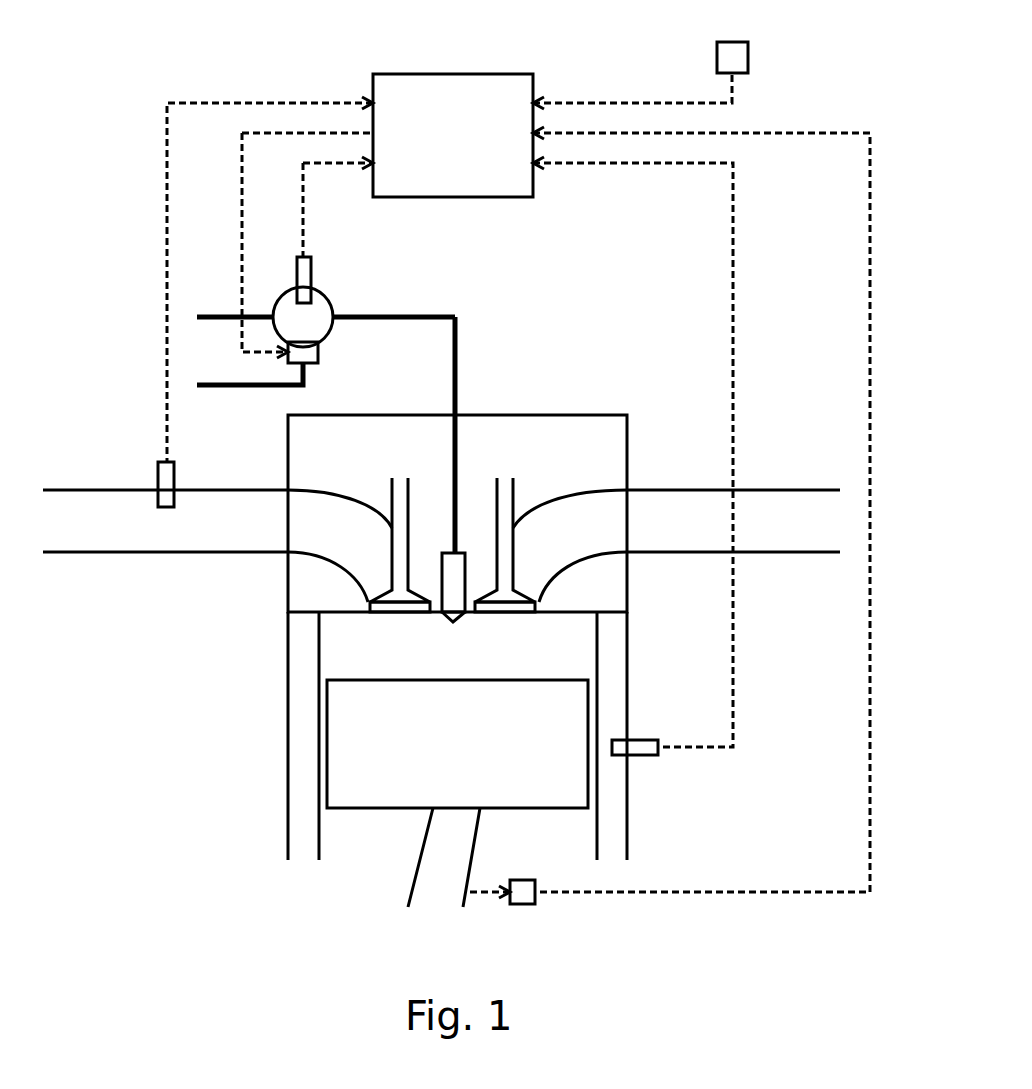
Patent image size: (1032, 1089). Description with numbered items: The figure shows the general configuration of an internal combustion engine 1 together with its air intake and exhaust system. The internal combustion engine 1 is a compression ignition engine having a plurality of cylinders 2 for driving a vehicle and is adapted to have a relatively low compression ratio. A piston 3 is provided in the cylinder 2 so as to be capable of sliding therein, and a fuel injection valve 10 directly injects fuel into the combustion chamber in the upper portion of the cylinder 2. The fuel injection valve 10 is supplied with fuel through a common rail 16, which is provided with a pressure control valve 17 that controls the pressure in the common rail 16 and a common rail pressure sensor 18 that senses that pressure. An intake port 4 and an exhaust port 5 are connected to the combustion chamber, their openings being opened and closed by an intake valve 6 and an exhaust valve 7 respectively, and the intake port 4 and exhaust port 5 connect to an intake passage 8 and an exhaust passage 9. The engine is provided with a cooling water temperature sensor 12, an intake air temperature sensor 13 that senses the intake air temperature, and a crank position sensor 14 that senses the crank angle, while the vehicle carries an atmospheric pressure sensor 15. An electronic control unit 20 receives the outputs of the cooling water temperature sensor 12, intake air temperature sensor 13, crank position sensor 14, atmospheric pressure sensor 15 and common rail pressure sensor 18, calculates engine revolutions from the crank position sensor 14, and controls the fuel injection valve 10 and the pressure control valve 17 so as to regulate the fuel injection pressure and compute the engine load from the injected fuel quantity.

The internal combustion engine 1 is at (243, 815).
The cylinder 2 is at (577, 650).
The piston 3 is at (327, 718).
The intake port 4 is at (318, 490).
The exhaust port 5 is at (596, 490).
The intake valve 6 is at (392, 490).
The exhaust valve 7 is at (513, 490).
The intake passage 8 is at (165, 552).
The exhaust passage 9 is at (790, 552).
The fuel injection valve 10 is at (466, 575).
The cooling water temperature sensor 12 is at (648, 758).
The intake air temperature sensor 13 is at (158, 475).
The crank position sensor 14 is at (520, 905).
The atmospheric pressure sensor 15 is at (748, 57).
The common rail 16 is at (330, 300).
The pressure control valve 17 is at (318, 352).
The common rail pressure sensor 18 is at (311, 270).
The electronic control unit 20 is at (418, 74).